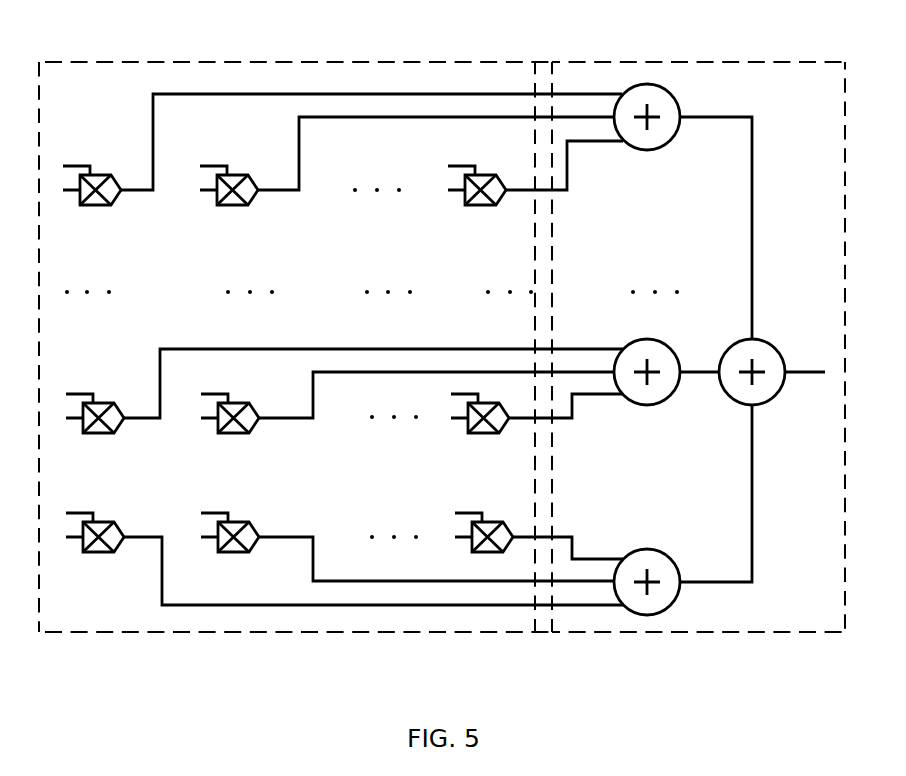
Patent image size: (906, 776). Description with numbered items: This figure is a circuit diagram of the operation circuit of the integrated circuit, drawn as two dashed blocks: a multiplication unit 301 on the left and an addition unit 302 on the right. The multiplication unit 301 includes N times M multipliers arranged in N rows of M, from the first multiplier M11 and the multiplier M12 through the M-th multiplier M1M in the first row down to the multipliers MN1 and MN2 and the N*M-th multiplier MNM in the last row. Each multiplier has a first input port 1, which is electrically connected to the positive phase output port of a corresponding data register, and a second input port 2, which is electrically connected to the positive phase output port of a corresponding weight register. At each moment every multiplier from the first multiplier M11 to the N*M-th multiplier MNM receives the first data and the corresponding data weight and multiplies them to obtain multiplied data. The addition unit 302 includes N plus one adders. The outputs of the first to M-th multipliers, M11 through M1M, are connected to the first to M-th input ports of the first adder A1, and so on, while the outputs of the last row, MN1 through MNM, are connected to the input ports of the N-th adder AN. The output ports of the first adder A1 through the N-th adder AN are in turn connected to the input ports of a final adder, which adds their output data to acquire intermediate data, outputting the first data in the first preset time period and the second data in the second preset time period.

The multiplication unit 301 is at (331, 321).
The addition unit 302 is at (698, 321).
The first input port 1 is at (263, 329).
The second input port 2 is at (258, 380).
The first multiplier M11 is at (97, 213).
The multiplier M12 is at (243, 213).
The M-th multiplier M1M is at (485, 213).
The ((N-1)*M+1)-th multiplier MN1 is at (102, 556).
The multiplier MN2 is at (236, 556).
The N*M-th multiplier MNM is at (487, 551).
The first adder A1 is at (647, 146).
The N-th adder AN is at (670, 582).